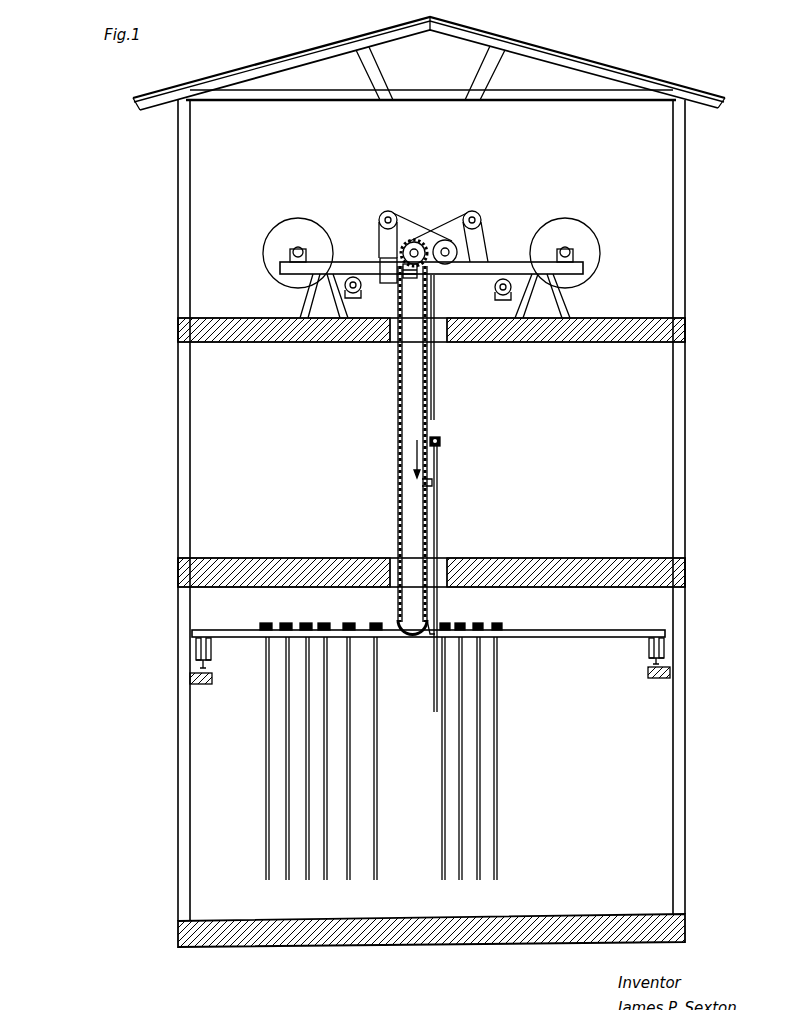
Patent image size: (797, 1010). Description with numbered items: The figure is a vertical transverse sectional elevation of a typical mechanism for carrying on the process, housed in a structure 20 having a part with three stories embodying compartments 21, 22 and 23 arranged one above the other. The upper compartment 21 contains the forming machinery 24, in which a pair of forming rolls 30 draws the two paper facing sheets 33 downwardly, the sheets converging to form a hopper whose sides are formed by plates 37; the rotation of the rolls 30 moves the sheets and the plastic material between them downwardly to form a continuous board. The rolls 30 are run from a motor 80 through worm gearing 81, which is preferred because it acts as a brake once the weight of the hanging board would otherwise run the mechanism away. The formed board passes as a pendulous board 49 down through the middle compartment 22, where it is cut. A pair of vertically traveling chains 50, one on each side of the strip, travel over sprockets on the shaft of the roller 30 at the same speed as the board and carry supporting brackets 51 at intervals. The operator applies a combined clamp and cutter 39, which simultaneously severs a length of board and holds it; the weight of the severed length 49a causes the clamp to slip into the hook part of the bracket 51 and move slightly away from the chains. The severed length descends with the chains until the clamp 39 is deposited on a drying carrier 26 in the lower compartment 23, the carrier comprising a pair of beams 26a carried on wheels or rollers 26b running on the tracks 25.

The structure 20 is at (686, 197).
The compartment 21 is at (489, 161).
The compartment 22 is at (521, 441).
The compartment 23 is at (587, 753).
The forming machinery 24 is at (488, 225).
The tracks 25 is at (208, 665).
The drying carrier 26 is at (428, 641).
The beams 26a is at (535, 637).
The wheels or rollers 26b is at (213, 650).
The forming rolls 30 is at (457, 250).
The paper facing sheets 33 is at (340, 262).
The plates 37 is at (420, 242).
The combined clamp and cutter 39 is at (442, 433).
The pendulous board 49 is at (437, 373).
The severed length of board 49a is at (496, 818).
The chains 50 is at (400, 417).
The supporting brackets 51 is at (392, 470).
The motor 80 is at (386, 278).
The worm gearing 81 is at (418, 282).